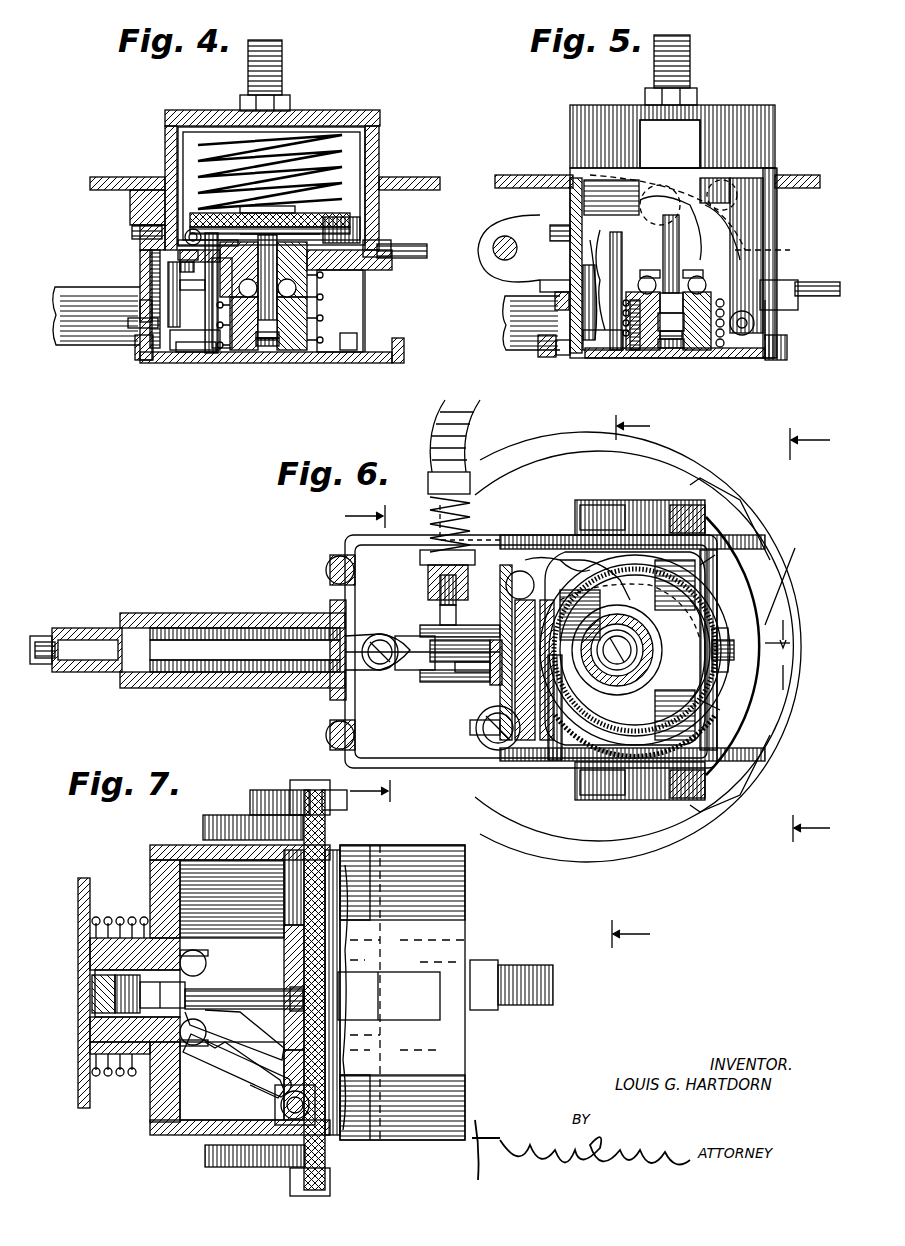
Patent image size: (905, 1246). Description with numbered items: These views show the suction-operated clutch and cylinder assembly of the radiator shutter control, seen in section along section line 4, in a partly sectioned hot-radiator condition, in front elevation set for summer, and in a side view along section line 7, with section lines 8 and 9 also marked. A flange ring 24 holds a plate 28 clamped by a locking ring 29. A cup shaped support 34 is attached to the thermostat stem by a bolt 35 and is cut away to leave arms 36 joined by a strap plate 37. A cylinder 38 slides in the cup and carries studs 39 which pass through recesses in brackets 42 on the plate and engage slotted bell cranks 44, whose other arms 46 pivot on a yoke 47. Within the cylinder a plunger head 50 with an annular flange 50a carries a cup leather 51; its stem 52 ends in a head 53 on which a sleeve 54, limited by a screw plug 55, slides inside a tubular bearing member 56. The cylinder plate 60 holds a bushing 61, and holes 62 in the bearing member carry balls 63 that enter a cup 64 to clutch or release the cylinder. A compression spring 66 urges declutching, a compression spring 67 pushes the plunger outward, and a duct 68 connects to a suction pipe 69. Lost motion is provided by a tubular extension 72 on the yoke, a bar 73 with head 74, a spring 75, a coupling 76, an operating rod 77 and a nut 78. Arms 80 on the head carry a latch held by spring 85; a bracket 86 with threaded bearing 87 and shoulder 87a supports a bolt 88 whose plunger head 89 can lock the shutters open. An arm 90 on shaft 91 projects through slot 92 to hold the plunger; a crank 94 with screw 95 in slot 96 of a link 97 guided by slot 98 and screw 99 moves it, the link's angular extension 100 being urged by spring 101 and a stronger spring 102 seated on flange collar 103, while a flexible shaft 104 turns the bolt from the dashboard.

In FIG. 6, the section line 4 is at (777, 655).
In FIG. 6, the section line 7 is at (623, 427).
In FIG. 7, the section line 7 is at (621, 934).
In FIG. 6, the section line 8 is at (367, 652).
In FIG. 6, the section line 9 is at (799, 635).
In FIG. 6, the flange ring 24 is at (808, 520).
In FIG. 4, the plate 28 is at (425, 177).
In FIG. 5, the plate 28 is at (800, 175).
In FIG. 6, the plate 28 is at (775, 570).
In FIG. 7, the plate 28 is at (345, 830).
In FIG. 6, the locking ring 29 is at (783, 548).
In FIG. 4, the cup shaped support 34 is at (318, 110).
In FIG. 5, the cup shaped support 34 is at (570, 105).
In FIG. 7, the cup shaped support 34 is at (465, 895).
In FIG. 4, the bolt 35 is at (284, 65).
In FIG. 5, the bolt 35 is at (692, 60).
In FIG. 7, the bolt 35 is at (510, 965).
In FIG. 4, the arms 36 is at (365, 300).
In FIG. 5, the arms 36 is at (760, 212).
In FIG. 6, the arms 36 is at (705, 660).
In FIG. 7, the arms 36 is at (370, 940).
In FIG. 4, the strap plate 37 is at (400, 363).
In FIG. 5, the strap plate 37 is at (778, 360).
In FIG. 7, the strap plate 37 is at (84, 878).
In FIG. 4, the cylinder 38 is at (190, 140).
In FIG. 5, the cylinder 38 is at (680, 170).
In FIG. 6, the cylinder 38 is at (712, 700).
In FIG. 7, the cylinder 38 is at (350, 880).
In FIG. 5, the studs 39 is at (715, 195).
In FIG. 6, the studs 39 is at (600, 505).
In FIG. 7, the studs 39 is at (300, 785).
In FIG. 6, the brackets 42 is at (660, 520).
In FIG. 7, the brackets 42 is at (235, 815).
In FIG. 5, the bell cranks 44 is at (790, 250).
In FIG. 6, the bell cranks 44 is at (622, 535).
In FIG. 6, the bell crank arms 46 is at (700, 510).
In FIG. 5, the yoke 47 is at (505, 335).
In FIG. 6, the yoke 47 is at (385, 750).
In FIG. 4, the plunger head 50 is at (320, 240).
In FIG. 5, the plunger head 50 is at (640, 195).
In FIG. 6, the plunger head 50 is at (740, 645).
In FIG. 7, the plunger head 50 is at (304, 955).
In FIG. 4, the annular flange 50a is at (180, 285).
In FIG. 6, the annular flange 50a is at (703, 625).
In FIG. 7, the annular flange 50a is at (284, 1030).
In FIG. 4, the cup leather 51 is at (195, 229).
In FIG. 6, the cup leather 51 is at (625, 745).
In FIG. 7, the cup leather 51 is at (315, 1140).
In FIG. 4, the stem 52 is at (277, 300).
In FIG. 5, the stem 52 is at (679, 240).
In FIG. 7, the stem 52 is at (240, 989).
In FIG. 4, the head 53 is at (292, 340).
In FIG. 5, the head 53 is at (672, 295).
In FIG. 7, the head 53 is at (165, 990).
In FIG. 4, the sleeve 54 is at (262, 350).
In FIG. 5, the sleeve 54 is at (676, 349).
In FIG. 7, the sleeve 54 is at (115, 1054).
In FIG. 4, the screw plug 55 is at (275, 350).
In FIG. 5, the screw plug 55 is at (668, 341).
In FIG. 6, the screw plug 55 is at (624, 625).
In FIG. 7, the screw plug 55 is at (92, 985).
In FIG. 4, the tubular bearing member 56 is at (252, 345).
In FIG. 5, the tubular bearing member 56 is at (645, 350).
In FIG. 6, the tubular bearing member 56 is at (636, 648).
In FIG. 7, the tubular bearing member 56 is at (120, 938).
In FIG. 4, the cylinder plate 60 is at (380, 245).
In FIG. 5, the cylinder plate 60 is at (755, 328).
In FIG. 6, the cylinder plate 60 is at (700, 582).
In FIG. 7, the cylinder plate 60 is at (152, 850).
In FIG. 4, the bushing 61 is at (350, 230).
In FIG. 5, the bushing 61 is at (775, 280).
In FIG. 6, the bushing 61 is at (630, 655).
In FIG. 7, the bushing 61 is at (150, 938).
In FIG. 5, the holes 62 is at (695, 272).
In FIG. 7, the holes 62 is at (208, 953).
In FIG. 4, the balls 63 is at (239, 290).
In FIG. 5, the balls 63 is at (706, 285).
In FIG. 7, the balls 63 is at (193, 950).
In FIG. 4, the cup 64 is at (245, 245).
In FIG. 5, the cup 64 is at (600, 250).
In FIG. 7, the cup 64 is at (248, 1060).
In FIG. 4, the compression spring 66 is at (323, 316).
In FIG. 5, the compression spring 66 is at (724, 348).
In FIG. 6, the compression spring 66 is at (628, 615).
In FIG. 7, the compression spring 66 is at (92, 1060).
In FIG. 4, the compression spring 67 is at (345, 138).
In FIG. 4, the duct 68 is at (362, 158).
In FIG. 6, the duct 68 is at (720, 635).
In FIG. 7, the duct 68 is at (385, 996).
In FIG. 4, the pipe 69 is at (410, 258).
In FIG. 5, the pipe 69 is at (820, 296).
In FIG. 6, the tubular extension 72 is at (240, 613).
In FIG. 6, the bar 73 is at (200, 640).
In FIG. 6, the head 74 is at (330, 620).
In FIG. 6, the spring 75 is at (160, 628).
In FIG. 6, the coupling 76 is at (90, 628).
In FIG. 6, the operating rod 77 is at (40, 636).
In FIG. 6, the nut 78 is at (45, 664).
In FIG. 6, the arms 80 is at (392, 670).
In FIG. 6, the spring 85 is at (405, 670).
In FIG. 4, the bracket 86 is at (135, 352).
In FIG. 5, the bracket 86 is at (540, 357).
In FIG. 6, the bracket 86 is at (535, 620).
In FIG. 6, the threaded bearing 87 is at (428, 568).
In FIG. 6, the shoulder 87a is at (440, 612).
In FIG. 5, the bolt 88 is at (493, 248).
In FIG. 6, the bolt 88 is at (455, 662).
In FIG. 6, the head 89 is at (470, 672).
In FIG. 4, the arm 90 is at (211, 353).
In FIG. 5, the arm 90 is at (622, 248).
In FIG. 6, the arm 90 is at (555, 745).
In FIG. 7, the arm 90 is at (240, 965).
In FIG. 4, the shaft 91 is at (185, 350).
In FIG. 5, the shaft 91 is at (595, 350).
In FIG. 6, the shaft 91 is at (510, 745).
In FIG. 7, the shaft 91 is at (115, 1000).
In FIG. 4, the slot 92 is at (168, 290).
In FIG. 5, the slot 92 is at (595, 300).
In FIG. 6, the slot 92 is at (580, 600).
In FIG. 4, the crank 94 is at (128, 328).
In FIG. 5, the crank 94 is at (562, 355).
In FIG. 6, the crank 94 is at (480, 735).
In FIG. 4, the screw 95 is at (140, 312).
In FIG. 5, the screw 95 is at (555, 305).
In FIG. 6, the screw 95 is at (490, 685).
In FIG. 4, the slot 96 is at (180, 267).
In FIG. 4, the link 97 is at (178, 255).
In FIG. 5, the link 97 is at (540, 286).
In FIG. 6, the link 97 is at (512, 620).
In FIG. 4, the slot 98 is at (130, 207).
In FIG. 4, the screw 99 is at (132, 230).
In FIG. 5, the screw 99 is at (550, 232).
In FIG. 6, the screw 99 is at (420, 556).
In FIG. 5, the angular extension 100 is at (500, 228).
In FIG. 6, the angular extension 100 is at (545, 562).
In FIG. 6, the spring 101 is at (440, 590).
In FIG. 6, the spring 102 is at (470, 520).
In FIG. 6, the flange collar 103 is at (428, 482).
In FIG. 6, the flexible shaft 104 is at (462, 420).